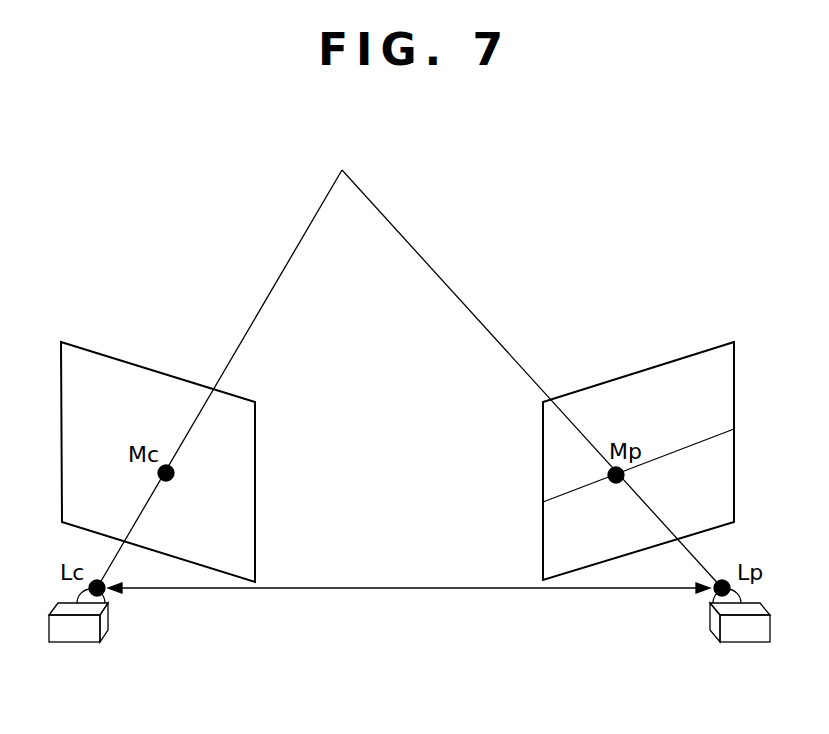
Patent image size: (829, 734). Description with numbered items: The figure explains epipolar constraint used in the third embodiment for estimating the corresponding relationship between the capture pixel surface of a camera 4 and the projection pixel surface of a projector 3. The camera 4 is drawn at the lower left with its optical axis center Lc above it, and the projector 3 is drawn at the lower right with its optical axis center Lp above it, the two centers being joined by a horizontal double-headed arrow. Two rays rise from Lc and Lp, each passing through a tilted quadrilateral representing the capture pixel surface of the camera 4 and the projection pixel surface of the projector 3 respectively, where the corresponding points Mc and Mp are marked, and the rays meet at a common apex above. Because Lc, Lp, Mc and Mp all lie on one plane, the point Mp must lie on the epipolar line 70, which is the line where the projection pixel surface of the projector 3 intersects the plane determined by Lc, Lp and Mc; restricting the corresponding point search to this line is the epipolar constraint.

The projector 3 is at (748, 644).
The camera 4 is at (76, 644).
The epipolar line 70 is at (710, 440).